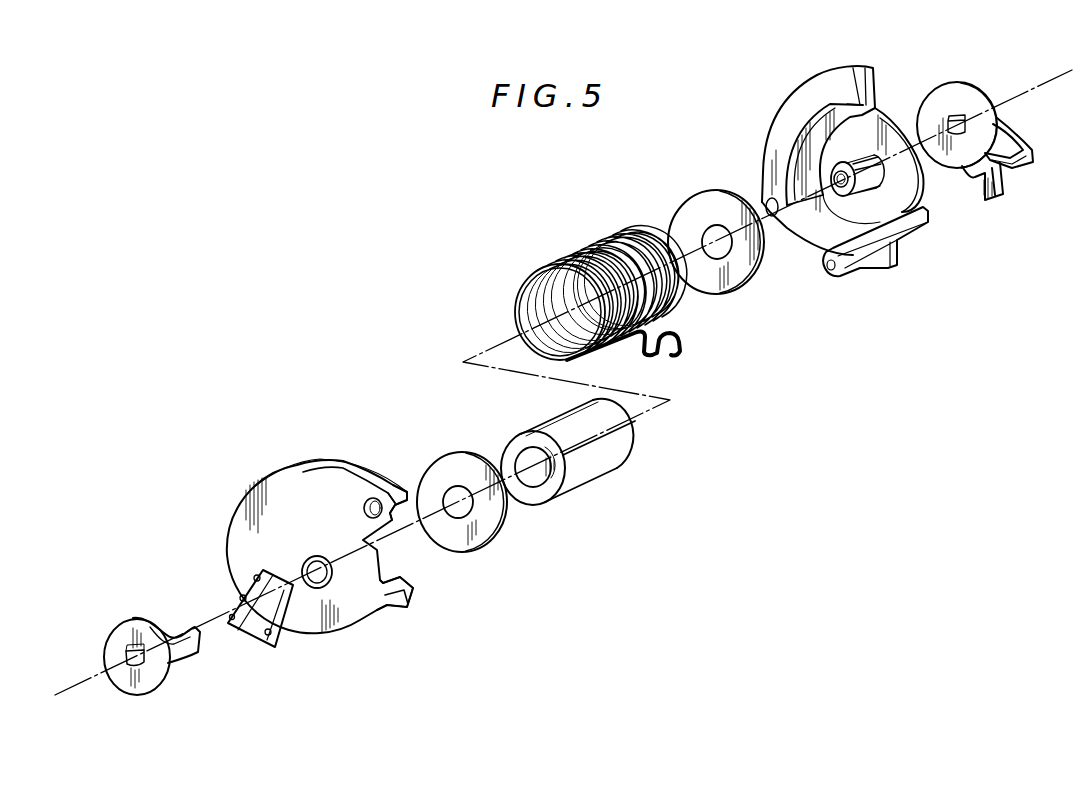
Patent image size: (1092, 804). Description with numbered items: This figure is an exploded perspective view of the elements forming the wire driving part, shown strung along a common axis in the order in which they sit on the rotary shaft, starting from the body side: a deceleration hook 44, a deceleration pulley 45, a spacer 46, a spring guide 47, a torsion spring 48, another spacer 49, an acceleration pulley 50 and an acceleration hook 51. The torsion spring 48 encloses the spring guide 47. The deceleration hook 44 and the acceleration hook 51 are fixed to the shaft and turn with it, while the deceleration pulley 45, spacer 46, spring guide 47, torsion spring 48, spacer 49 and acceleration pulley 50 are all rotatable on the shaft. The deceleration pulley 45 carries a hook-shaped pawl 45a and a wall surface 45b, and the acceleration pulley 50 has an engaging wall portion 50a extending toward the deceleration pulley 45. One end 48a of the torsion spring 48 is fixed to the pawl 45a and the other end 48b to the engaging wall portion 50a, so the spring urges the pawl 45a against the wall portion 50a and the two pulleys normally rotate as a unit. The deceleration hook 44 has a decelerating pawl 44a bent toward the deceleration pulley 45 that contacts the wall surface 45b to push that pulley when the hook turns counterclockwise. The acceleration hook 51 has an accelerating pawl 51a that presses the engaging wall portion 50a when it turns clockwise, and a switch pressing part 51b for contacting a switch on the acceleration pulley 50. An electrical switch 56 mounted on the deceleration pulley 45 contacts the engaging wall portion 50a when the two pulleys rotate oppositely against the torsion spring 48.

The deceleration hook 44 is at (112, 627).
The decelerating pawl 44a is at (180, 627).
The deceleration pulley 45 is at (292, 468).
The hook-shaped pawl 45a is at (413, 582).
The wall surface 45b is at (373, 543).
The spacer 46 is at (438, 453).
The spring guide 47 is at (540, 420).
The torsion spring 48 is at (577, 258).
The end of torsion spring 48a is at (652, 356).
The another end of torsion spring 48b is at (686, 338).
The spacer 49 is at (694, 192).
The acceleration pulley 50 is at (786, 86).
The engaging wall portion 50a is at (898, 247).
The acceleration hook 51 is at (954, 84).
The accelerating pawl 51a is at (1022, 175).
The switch pressing part 51b is at (985, 205).
The electrical switch 56 is at (245, 647).